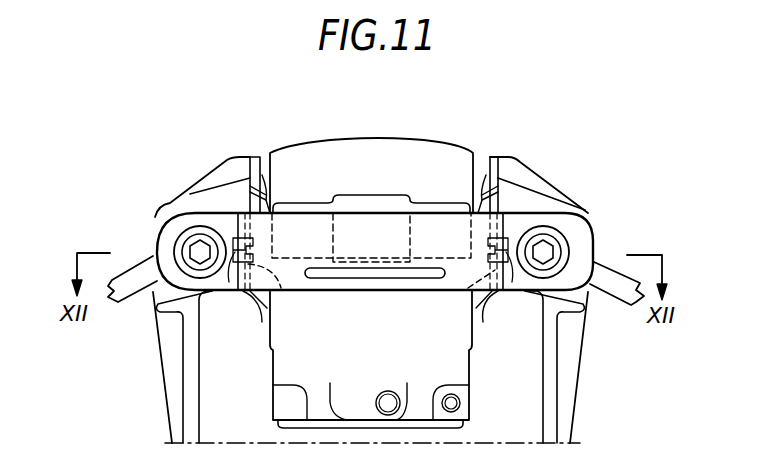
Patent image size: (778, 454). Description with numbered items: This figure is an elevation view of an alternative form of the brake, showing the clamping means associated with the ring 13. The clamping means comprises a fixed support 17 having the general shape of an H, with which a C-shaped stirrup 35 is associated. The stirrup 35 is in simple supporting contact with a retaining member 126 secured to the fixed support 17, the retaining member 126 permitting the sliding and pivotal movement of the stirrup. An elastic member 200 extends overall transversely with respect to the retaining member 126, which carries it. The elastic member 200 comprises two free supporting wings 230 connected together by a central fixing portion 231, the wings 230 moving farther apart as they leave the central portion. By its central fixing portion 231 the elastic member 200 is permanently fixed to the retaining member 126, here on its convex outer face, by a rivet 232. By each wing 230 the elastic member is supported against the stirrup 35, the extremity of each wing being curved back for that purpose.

The ring 13 is at (606, 265).
The fixed support 17 is at (543, 182).
The stirrup 35 is at (384, 142).
The retaining member 126 is at (565, 233).
The elastic member 200 is at (265, 176).
The free supporting wings 230 is at (264, 200).
The central fixing portion 231 is at (273, 291).
The rivet 232 is at (232, 292).